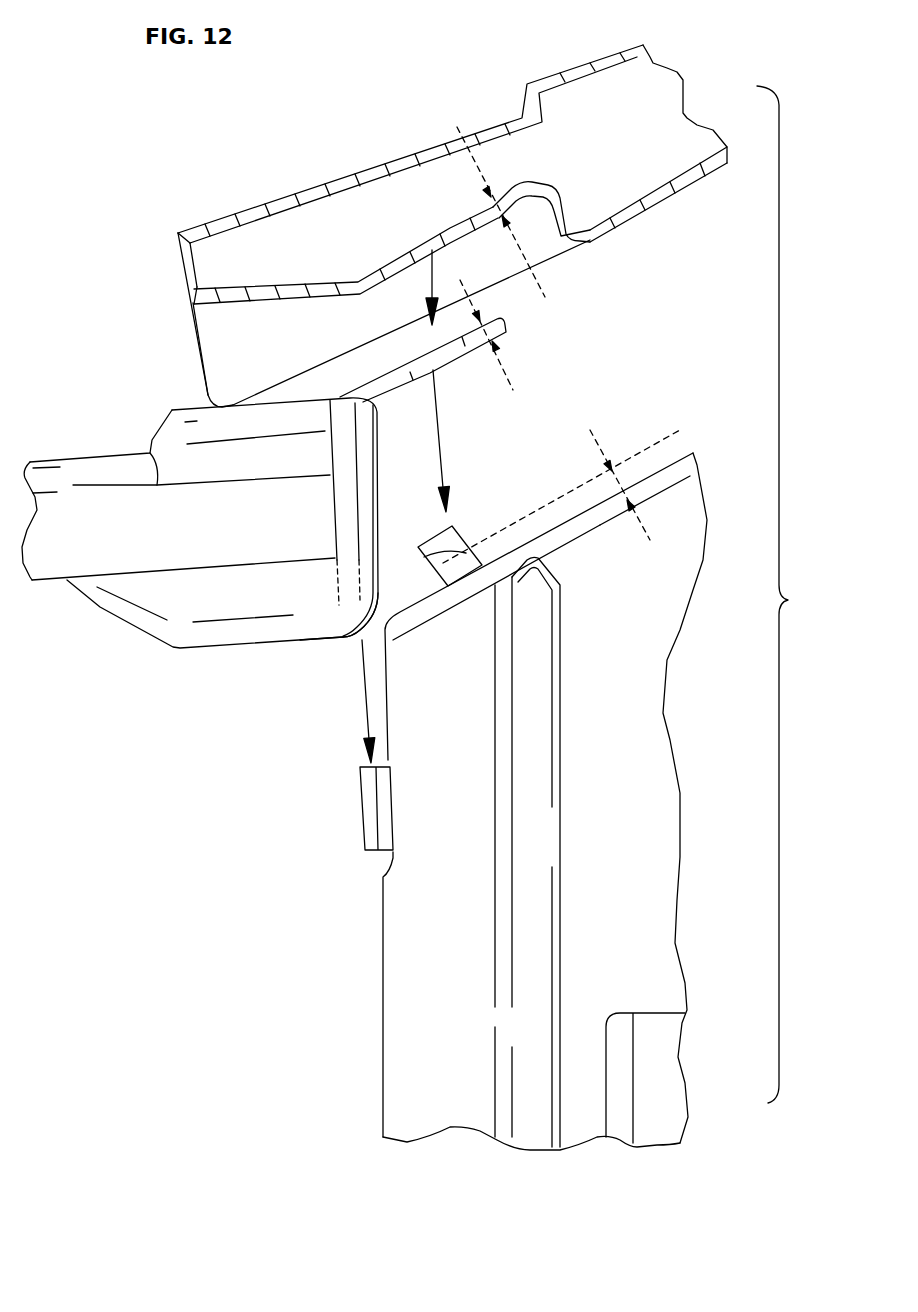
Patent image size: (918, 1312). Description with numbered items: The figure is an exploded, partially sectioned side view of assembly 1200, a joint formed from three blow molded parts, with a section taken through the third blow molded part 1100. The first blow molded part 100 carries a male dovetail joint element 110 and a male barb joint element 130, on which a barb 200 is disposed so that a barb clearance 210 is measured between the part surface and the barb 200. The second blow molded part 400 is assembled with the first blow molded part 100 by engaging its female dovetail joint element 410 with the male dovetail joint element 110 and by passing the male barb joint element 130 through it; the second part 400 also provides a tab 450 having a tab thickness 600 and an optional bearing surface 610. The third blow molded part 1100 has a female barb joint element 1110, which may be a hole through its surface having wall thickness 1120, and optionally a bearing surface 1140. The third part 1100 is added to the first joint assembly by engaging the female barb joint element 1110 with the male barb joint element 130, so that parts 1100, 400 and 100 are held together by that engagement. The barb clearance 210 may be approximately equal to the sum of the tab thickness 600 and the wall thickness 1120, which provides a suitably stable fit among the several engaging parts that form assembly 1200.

The first blow molded part 100 is at (400, 1038).
The male dovetail joint element 110 is at (360, 823).
The male barb joint element 130 is at (442, 538).
The barb 200 is at (473, 533).
The barb clearance 210 is at (650, 522).
The second blow molded part 400 is at (130, 610).
The female dovetail joint element 410 is at (347, 612).
The tab 450 is at (504, 324).
The tab thickness 600 is at (513, 389).
The bearing surface 610 is at (183, 410).
The third blow molded part 1100 is at (250, 382).
The female barb joint element 1110 is at (417, 250).
The wall thickness 1120 is at (522, 245).
The bearing surface 1140 is at (235, 300).
The assembly 1200 is at (809, 594).